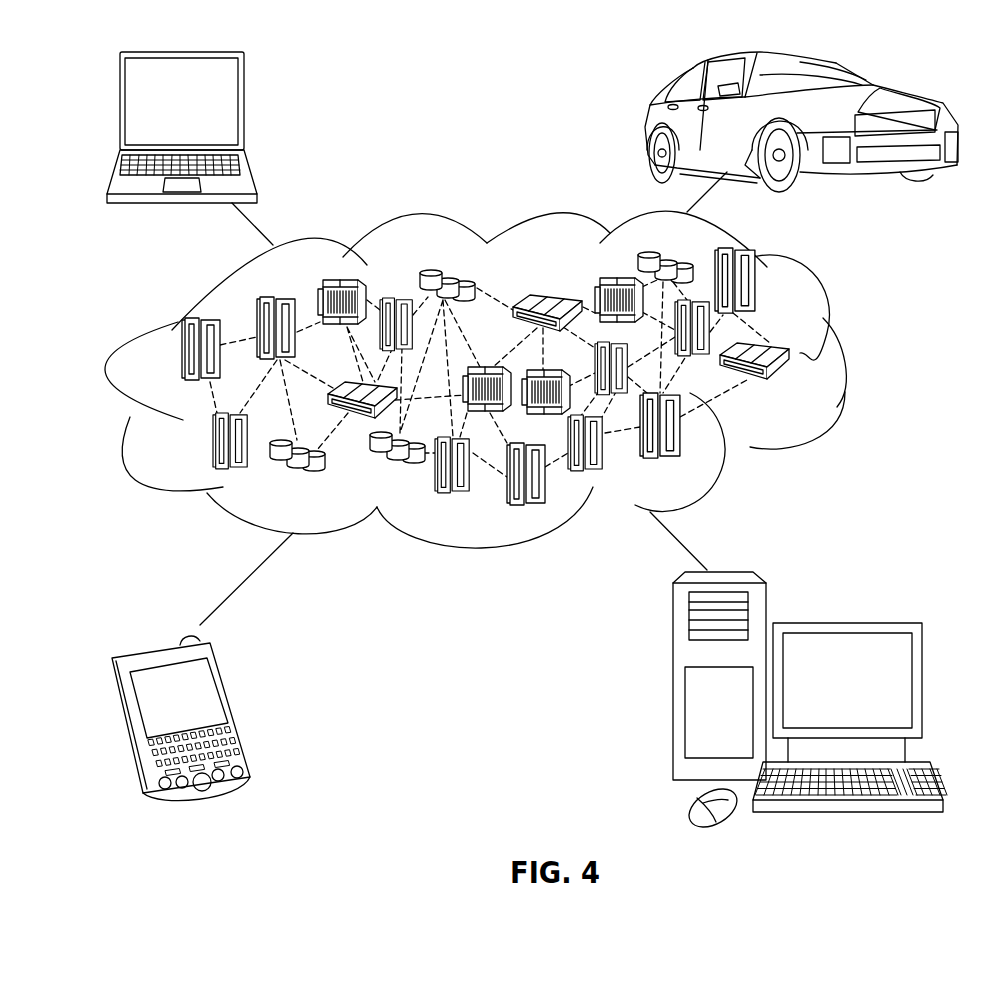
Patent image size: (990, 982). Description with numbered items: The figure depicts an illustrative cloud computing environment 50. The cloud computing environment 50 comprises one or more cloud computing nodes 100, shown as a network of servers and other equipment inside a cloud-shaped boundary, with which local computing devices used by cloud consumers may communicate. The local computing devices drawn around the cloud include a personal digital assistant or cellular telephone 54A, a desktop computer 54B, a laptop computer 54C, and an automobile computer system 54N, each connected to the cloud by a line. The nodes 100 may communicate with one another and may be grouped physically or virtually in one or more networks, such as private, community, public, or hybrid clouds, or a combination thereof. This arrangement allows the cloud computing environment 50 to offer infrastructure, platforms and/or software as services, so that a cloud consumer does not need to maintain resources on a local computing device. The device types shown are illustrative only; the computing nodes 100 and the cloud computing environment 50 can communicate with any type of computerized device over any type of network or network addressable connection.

The cloud computing environment 50 is at (845, 358).
The cloud computing nodes 100 is at (792, 387).
The personal digital assistant or cellular telephone 54A is at (238, 710).
The desktop computer 54B is at (845, 622).
The laptop computer 54C is at (244, 108).
The automobile computer system 54N is at (645, 122).